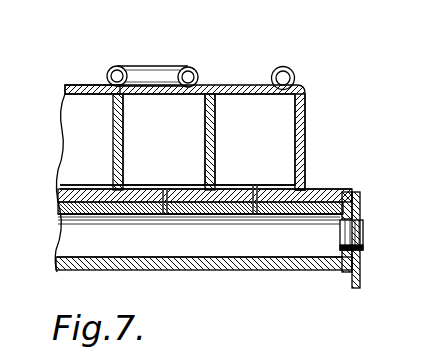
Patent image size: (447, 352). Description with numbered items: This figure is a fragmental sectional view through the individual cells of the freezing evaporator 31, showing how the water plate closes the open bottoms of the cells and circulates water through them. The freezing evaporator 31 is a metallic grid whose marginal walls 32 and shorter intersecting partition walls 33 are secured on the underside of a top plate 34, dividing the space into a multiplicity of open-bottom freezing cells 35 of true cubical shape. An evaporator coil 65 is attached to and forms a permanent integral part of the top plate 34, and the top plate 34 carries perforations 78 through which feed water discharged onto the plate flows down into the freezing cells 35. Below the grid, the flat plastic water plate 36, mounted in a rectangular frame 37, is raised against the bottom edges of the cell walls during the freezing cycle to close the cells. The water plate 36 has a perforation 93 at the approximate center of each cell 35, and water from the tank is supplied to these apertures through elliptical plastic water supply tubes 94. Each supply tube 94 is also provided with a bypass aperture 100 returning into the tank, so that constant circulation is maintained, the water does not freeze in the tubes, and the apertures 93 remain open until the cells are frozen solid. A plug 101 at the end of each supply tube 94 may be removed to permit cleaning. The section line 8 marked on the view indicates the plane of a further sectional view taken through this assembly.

The freezing evaporator 31 is at (310, 130).
The marginal walls 32 is at (300, 138).
The partition walls 33 is at (113, 143).
The top plate 34 is at (93, 89).
The freezing cells 35 is at (172, 166).
The water plate 36 is at (330, 190).
The frame 37 is at (360, 270).
The evaporator coil 65 is at (272, 78).
The perforations 78 is at (166, 85).
The section line 8 is at (255, 90).
The perforation 93 is at (262, 185).
The water supply tubes 94 is at (195, 247).
The bypass apertures 100 is at (326, 259).
The plugs 101 is at (363, 230).